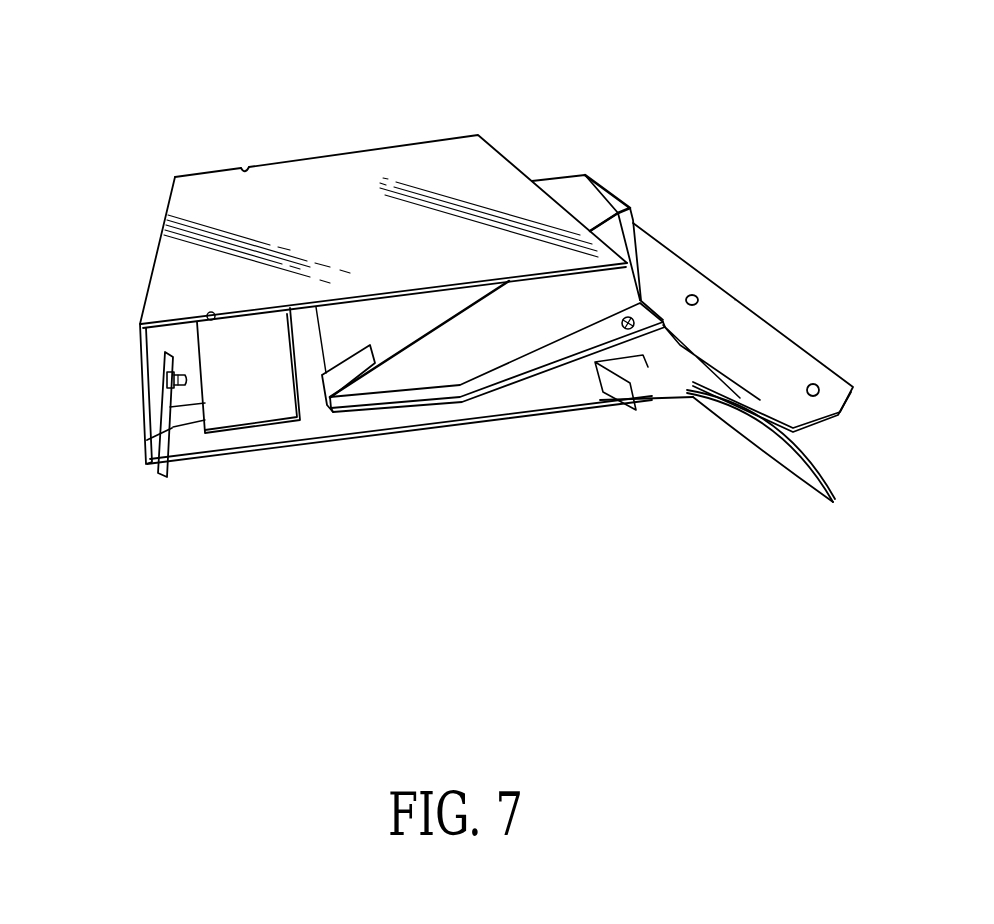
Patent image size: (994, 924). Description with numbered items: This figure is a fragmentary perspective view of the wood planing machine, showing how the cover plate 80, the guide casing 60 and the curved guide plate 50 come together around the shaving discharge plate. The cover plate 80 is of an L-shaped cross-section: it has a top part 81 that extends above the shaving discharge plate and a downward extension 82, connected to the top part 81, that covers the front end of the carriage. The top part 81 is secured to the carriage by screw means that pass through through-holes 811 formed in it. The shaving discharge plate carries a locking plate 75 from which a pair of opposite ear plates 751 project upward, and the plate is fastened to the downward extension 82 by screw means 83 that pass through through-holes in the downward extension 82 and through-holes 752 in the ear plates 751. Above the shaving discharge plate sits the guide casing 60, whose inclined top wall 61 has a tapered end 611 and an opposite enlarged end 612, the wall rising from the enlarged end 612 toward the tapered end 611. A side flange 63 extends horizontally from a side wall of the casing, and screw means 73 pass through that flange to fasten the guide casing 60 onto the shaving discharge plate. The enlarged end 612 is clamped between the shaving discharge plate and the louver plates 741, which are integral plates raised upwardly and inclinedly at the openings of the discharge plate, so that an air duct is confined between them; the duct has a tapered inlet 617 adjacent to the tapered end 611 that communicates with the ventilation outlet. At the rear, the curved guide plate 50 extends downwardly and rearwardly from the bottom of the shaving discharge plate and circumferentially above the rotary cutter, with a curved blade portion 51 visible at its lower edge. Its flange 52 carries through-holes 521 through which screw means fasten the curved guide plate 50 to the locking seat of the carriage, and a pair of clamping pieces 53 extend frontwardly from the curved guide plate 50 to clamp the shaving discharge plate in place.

The curved guide plate 50 is at (725, 280).
The blade 51 is at (827, 473).
The flange 52 is at (798, 340).
The through-holes 521 is at (818, 385).
The clamping pieces 53 is at (667, 378).
The guide casing 60 is at (563, 162).
The inclined top wall 61 is at (553, 190).
The tapered end 611 is at (597, 183).
The enlarged end 612 is at (354, 388).
The tapered inlet 617 is at (640, 260).
The side flange 63 is at (487, 368).
The screw means 73 is at (628, 328).
The louver plates 741 is at (341, 377).
The locking plate 75 is at (228, 420).
The ear plates 751 is at (165, 373).
The through-holes 752 is at (168, 383).
The cover plate 80 is at (276, 150).
The top part 81 is at (190, 186).
The through-holes 811 is at (247, 163).
The downward extension 82 is at (140, 333).
The screw means 83 is at (172, 392).